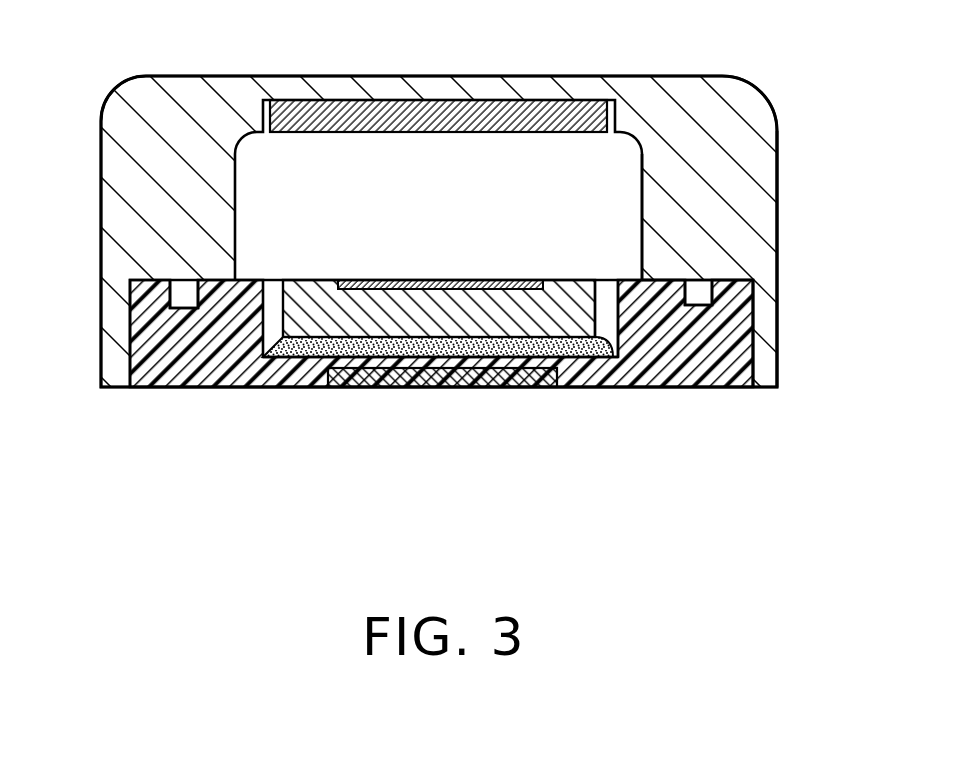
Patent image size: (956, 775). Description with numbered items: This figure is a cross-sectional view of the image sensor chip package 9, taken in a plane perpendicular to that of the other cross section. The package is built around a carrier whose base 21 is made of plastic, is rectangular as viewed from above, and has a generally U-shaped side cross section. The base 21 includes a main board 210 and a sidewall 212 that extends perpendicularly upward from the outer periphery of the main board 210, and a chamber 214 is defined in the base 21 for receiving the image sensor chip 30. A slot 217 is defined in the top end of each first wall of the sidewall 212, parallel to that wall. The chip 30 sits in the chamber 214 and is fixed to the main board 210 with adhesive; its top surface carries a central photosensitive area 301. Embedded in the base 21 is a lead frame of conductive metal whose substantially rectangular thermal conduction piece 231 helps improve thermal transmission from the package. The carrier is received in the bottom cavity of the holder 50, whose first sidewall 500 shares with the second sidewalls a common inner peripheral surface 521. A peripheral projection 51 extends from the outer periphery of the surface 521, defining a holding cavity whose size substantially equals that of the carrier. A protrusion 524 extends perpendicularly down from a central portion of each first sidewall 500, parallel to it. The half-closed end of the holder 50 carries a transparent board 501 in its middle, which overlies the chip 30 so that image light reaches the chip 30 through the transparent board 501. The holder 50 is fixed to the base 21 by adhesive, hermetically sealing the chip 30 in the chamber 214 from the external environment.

The image sensor chip package 9 is at (273, 32).
The holder 50 is at (760, 66).
The first sidewall 500 is at (740, 130).
The transparent board 501 is at (263, 110).
The inner peripheral surface 521 is at (729, 270).
The protrusion 524 is at (697, 290).
The peripheral projection 51 is at (768, 352).
The base 21 is at (310, 451).
The sidewall 212 is at (192, 333).
The main board 210 is at (307, 380).
The image sensor chip 30 is at (400, 318).
The photosensitive area 301 is at (458, 287).
The thermal conduction piece 231 is at (518, 377).
The chamber 214 is at (607, 303).
The slot 217 is at (699, 306).